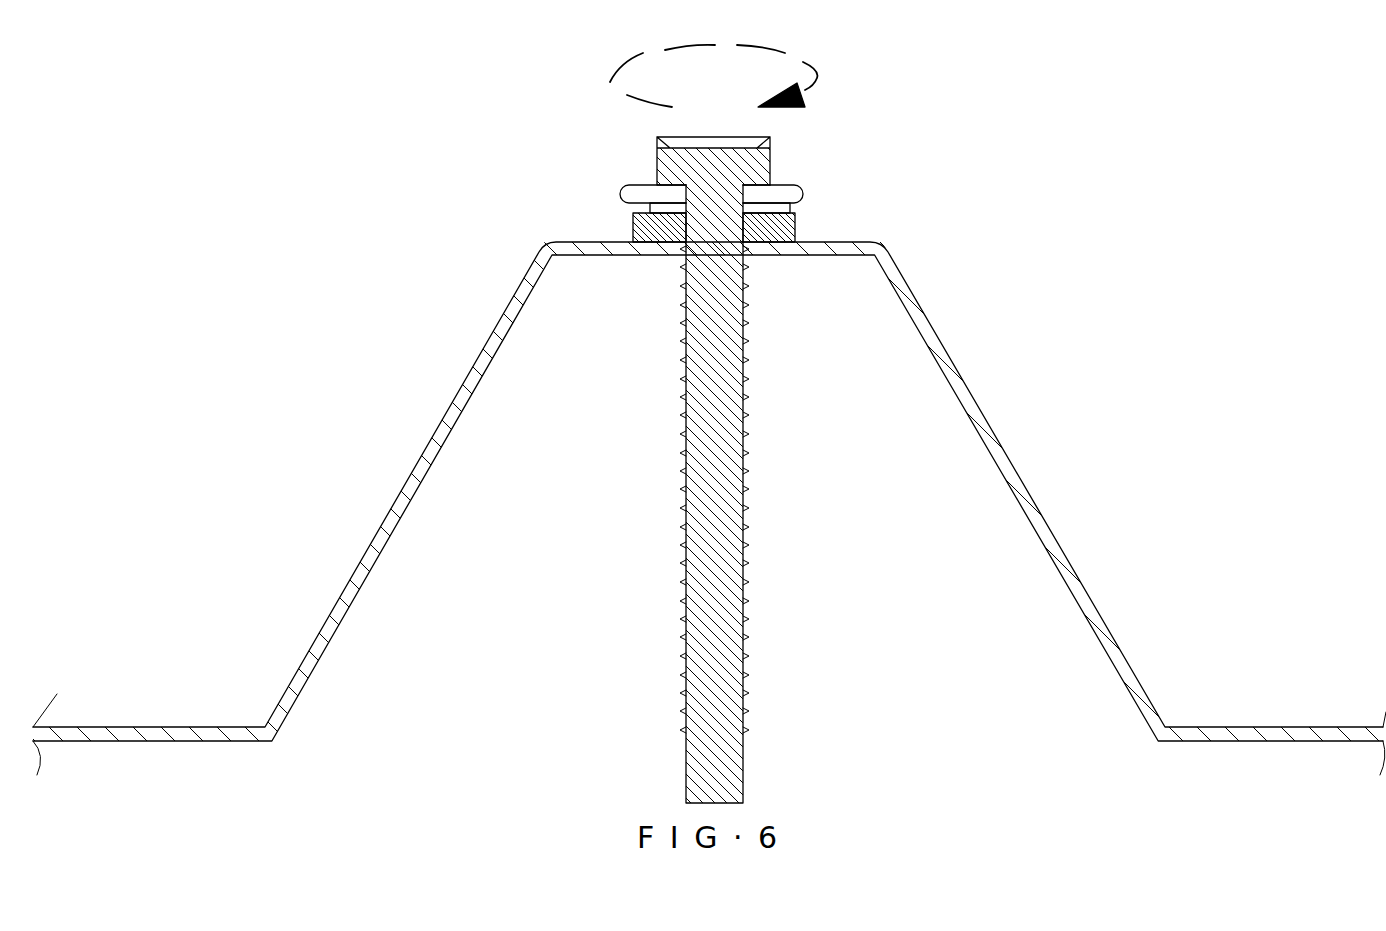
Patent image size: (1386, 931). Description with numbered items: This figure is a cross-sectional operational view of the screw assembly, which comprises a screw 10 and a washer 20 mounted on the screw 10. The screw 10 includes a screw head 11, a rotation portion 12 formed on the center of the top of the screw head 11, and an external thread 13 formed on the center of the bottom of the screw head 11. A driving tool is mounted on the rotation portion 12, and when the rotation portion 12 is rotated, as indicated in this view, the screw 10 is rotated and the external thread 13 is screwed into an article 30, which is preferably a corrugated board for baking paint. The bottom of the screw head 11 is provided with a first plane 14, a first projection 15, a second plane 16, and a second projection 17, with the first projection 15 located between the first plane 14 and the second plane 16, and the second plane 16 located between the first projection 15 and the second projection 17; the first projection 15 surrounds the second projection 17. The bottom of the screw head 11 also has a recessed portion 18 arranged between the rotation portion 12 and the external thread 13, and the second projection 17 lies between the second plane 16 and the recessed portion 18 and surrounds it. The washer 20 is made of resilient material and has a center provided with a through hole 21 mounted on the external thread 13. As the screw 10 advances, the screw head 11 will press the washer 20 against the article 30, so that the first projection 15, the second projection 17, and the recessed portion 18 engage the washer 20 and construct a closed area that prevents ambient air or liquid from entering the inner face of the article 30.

The screw 10 is at (883, 128).
The screw head 11 is at (782, 185).
The rotation portion 12 is at (718, 137).
The external thread 13 is at (686, 468).
The first plane 14 is at (802, 198).
The first projection 15 is at (797, 190).
The second plane 16 is at (786, 213).
The second projection 17 is at (637, 207).
The recessed portion 18 is at (671, 192).
The washer 20 is at (633, 230).
The through hole 21 is at (682, 233).
The article 30 is at (450, 405).